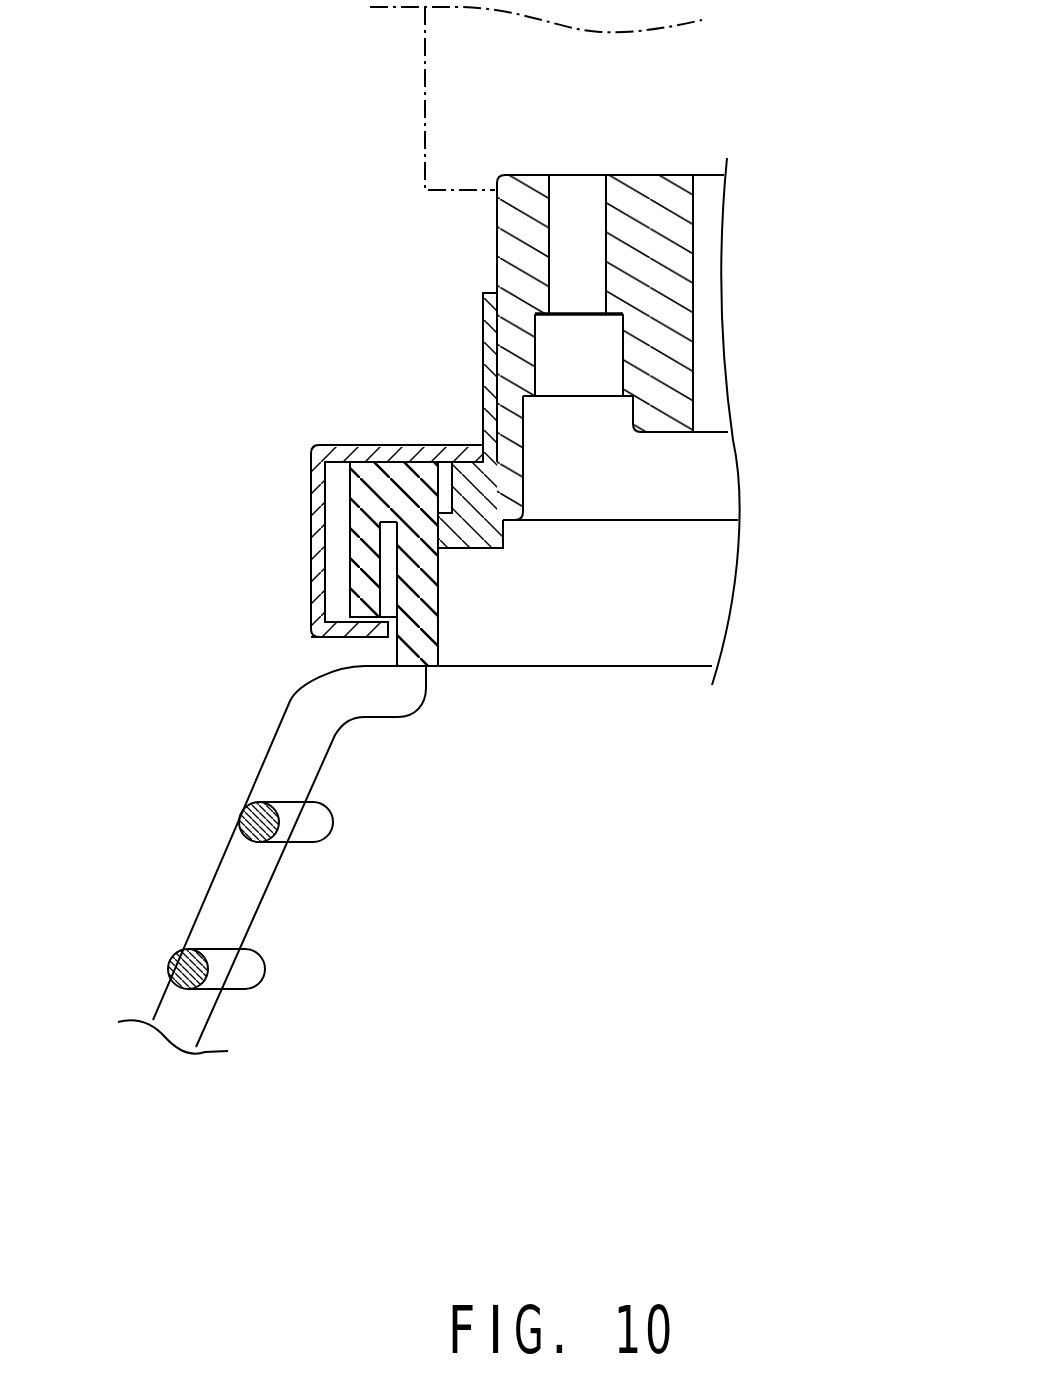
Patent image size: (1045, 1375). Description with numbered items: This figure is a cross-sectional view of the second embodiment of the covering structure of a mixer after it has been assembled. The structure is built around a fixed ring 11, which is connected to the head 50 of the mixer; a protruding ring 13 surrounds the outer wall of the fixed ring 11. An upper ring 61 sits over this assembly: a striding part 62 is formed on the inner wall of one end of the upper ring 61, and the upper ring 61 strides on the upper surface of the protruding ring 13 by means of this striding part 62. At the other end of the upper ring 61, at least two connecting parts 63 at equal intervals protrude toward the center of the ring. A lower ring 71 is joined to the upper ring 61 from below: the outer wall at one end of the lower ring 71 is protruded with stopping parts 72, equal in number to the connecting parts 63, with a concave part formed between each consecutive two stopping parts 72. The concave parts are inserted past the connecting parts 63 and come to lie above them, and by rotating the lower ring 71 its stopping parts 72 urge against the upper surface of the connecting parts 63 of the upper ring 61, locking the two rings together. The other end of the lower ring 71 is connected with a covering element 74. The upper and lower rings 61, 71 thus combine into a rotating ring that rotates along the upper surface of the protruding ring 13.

The head 50 is at (442, 97).
The fixed ring 11 is at (497, 228).
The protruding ring 13 is at (473, 540).
The striding part 62 is at (474, 474).
The upper ring 61 is at (313, 447).
The connecting part 63 is at (348, 634).
The stopping part 72 is at (353, 520).
The lower ring 71 is at (408, 592).
The covering element 74 is at (228, 873).